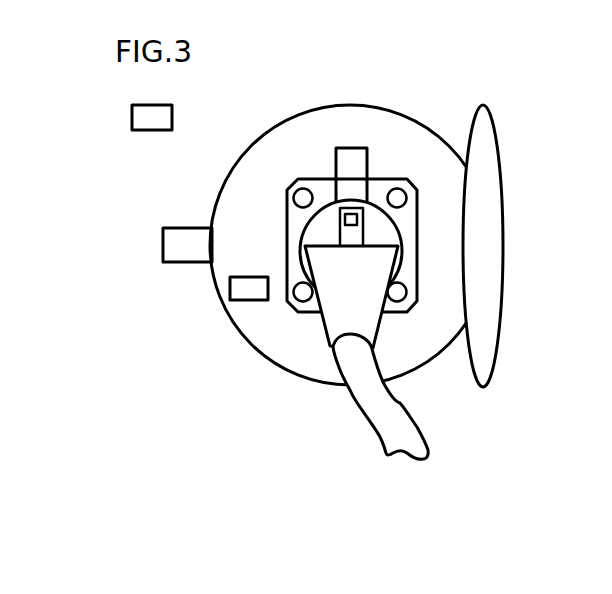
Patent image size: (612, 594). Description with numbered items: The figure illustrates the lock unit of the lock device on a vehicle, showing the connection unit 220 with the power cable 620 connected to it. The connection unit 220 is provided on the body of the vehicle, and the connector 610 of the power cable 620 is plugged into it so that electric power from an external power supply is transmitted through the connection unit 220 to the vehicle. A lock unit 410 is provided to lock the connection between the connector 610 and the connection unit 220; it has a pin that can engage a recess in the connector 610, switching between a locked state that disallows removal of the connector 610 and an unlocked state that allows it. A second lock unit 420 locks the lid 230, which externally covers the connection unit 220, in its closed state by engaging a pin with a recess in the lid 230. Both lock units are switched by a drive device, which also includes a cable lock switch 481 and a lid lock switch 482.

The connection unit 220 is at (304, 276).
The lid 230 is at (499, 152).
The lock unit 410 is at (352, 148).
The lock unit 420 is at (190, 227).
The cable lock switch 481 is at (230, 287).
The lid lock switch 482 is at (132, 117).
The connector 610 is at (324, 333).
The power cable 620 is at (400, 423).